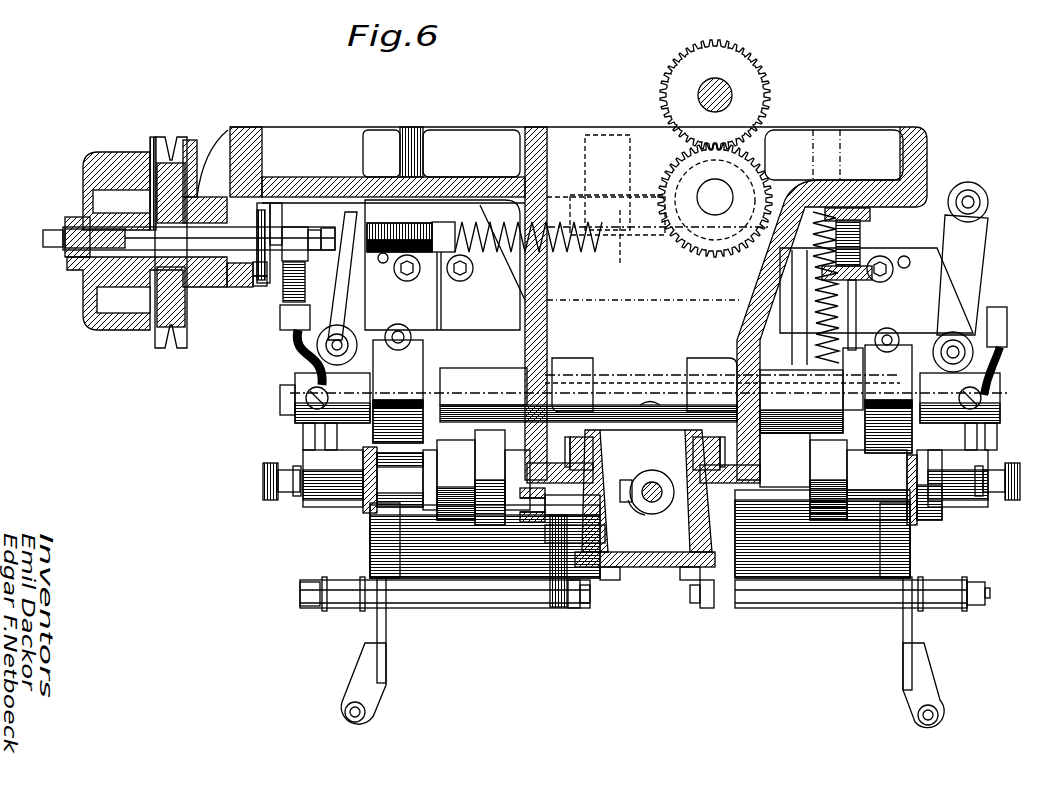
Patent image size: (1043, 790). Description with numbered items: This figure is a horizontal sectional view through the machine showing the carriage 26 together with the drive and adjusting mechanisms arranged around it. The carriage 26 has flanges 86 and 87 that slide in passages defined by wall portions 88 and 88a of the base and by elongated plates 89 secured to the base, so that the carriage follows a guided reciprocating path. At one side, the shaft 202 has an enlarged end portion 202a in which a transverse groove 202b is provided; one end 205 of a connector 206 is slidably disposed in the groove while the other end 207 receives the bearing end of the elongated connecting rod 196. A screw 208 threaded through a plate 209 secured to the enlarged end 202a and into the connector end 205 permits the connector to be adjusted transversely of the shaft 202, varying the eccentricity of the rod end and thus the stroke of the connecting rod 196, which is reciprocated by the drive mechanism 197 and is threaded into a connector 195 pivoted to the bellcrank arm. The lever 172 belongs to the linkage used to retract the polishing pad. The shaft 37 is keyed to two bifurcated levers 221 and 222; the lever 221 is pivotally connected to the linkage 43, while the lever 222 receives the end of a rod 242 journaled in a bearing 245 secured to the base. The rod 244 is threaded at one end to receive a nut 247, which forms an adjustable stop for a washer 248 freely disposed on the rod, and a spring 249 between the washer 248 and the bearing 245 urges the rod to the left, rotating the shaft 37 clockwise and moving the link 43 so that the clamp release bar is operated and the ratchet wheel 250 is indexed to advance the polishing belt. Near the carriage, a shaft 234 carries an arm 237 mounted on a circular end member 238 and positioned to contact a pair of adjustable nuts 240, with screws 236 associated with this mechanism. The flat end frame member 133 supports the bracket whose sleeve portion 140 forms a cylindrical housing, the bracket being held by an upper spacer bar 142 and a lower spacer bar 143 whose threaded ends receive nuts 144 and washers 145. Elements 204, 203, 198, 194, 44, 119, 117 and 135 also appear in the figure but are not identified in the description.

The bracket 204 is at (238, 128).
The transverse groove 202b is at (266, 203).
The enlarged end portion 202a is at (278, 203).
The connector 206 is at (296, 228).
The other end of connector 207 is at (330, 230).
The one end of connector 205 is at (258, 236).
The shaft 202 is at (46, 240).
The lever 172 is at (345, 240).
The plate 209 is at (243, 287).
The screw 208 is at (262, 278).
The drive mechanism 197 is at (268, 288).
The elongated connecting rod 196 is at (286, 303).
The housing 203 is at (88, 322).
The pulley 198 is at (170, 348).
The connector 195 is at (285, 330).
The lever 194 is at (298, 350).
The washer 248 is at (445, 224).
The spring 249 is at (474, 268).
The nut 247 is at (420, 275).
The lever 222 is at (685, 218).
The rod 244 is at (572, 255).
The bearing 245 is at (630, 260).
The rod 242 is at (606, 262).
The lever 221 is at (738, 256).
The shaft 37 is at (715, 197).
The linkage 43 is at (784, 322).
The spring 44 is at (848, 345).
The ratchet wheel 250 is at (822, 366).
The wall portions 88 is at (580, 435).
The wall portion 88a is at (690, 425).
The flange 87 is at (710, 437).
The flange 86 is at (577, 437).
The lower spacer bar 143 is at (375, 425).
The shaft 234 is at (525, 492).
The arm 237 is at (640, 483).
The adjustable nuts 240 is at (660, 470).
The circular end member 238 is at (647, 507).
The elongated plates 89 is at (745, 480).
The knob 119 is at (300, 503).
The shaft 117 is at (337, 508).
The roller 135 is at (428, 575).
The sleeve portion 140 is at (470, 575).
The screws 236 is at (540, 545).
The carriage 26 is at (665, 572).
The upper spacer bar 142 is at (508, 608).
The nuts 144 is at (576, 608).
The washers 145 is at (588, 610).
The flat end frame member 133 is at (386, 628).